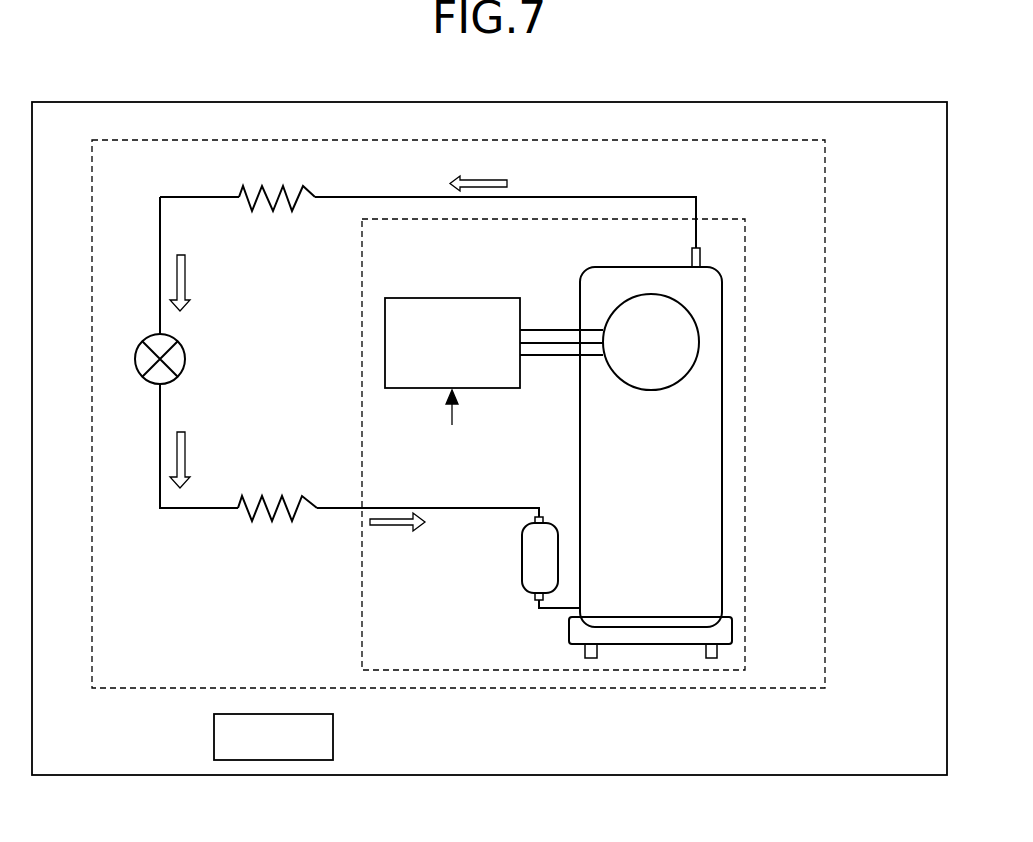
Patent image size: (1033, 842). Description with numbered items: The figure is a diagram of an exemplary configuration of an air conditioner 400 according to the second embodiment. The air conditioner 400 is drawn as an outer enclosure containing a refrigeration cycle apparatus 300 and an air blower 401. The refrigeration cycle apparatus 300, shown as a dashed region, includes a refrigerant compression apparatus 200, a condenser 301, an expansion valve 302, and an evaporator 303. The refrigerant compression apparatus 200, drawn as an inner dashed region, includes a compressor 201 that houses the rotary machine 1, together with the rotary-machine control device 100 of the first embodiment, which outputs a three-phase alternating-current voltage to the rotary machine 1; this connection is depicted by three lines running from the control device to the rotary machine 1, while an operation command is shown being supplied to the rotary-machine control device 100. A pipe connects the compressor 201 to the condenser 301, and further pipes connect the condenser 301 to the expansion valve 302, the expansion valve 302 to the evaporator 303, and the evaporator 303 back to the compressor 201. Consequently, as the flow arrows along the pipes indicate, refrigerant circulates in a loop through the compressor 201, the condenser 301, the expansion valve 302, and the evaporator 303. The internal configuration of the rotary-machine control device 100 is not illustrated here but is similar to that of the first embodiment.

The rotary machine 1 is at (678, 302).
The rotary-machine control device 100 is at (466, 298).
The refrigerant compression apparatus 200 is at (746, 243).
The compressor 201 is at (722, 307).
The refrigeration cycle apparatus 300 is at (826, 180).
The condenser 301 is at (243, 190).
The expansion valve 302 is at (186, 357).
The evaporator 303 is at (244, 500).
The air conditioner 400 is at (910, 102).
The air blower 401 is at (333, 735).